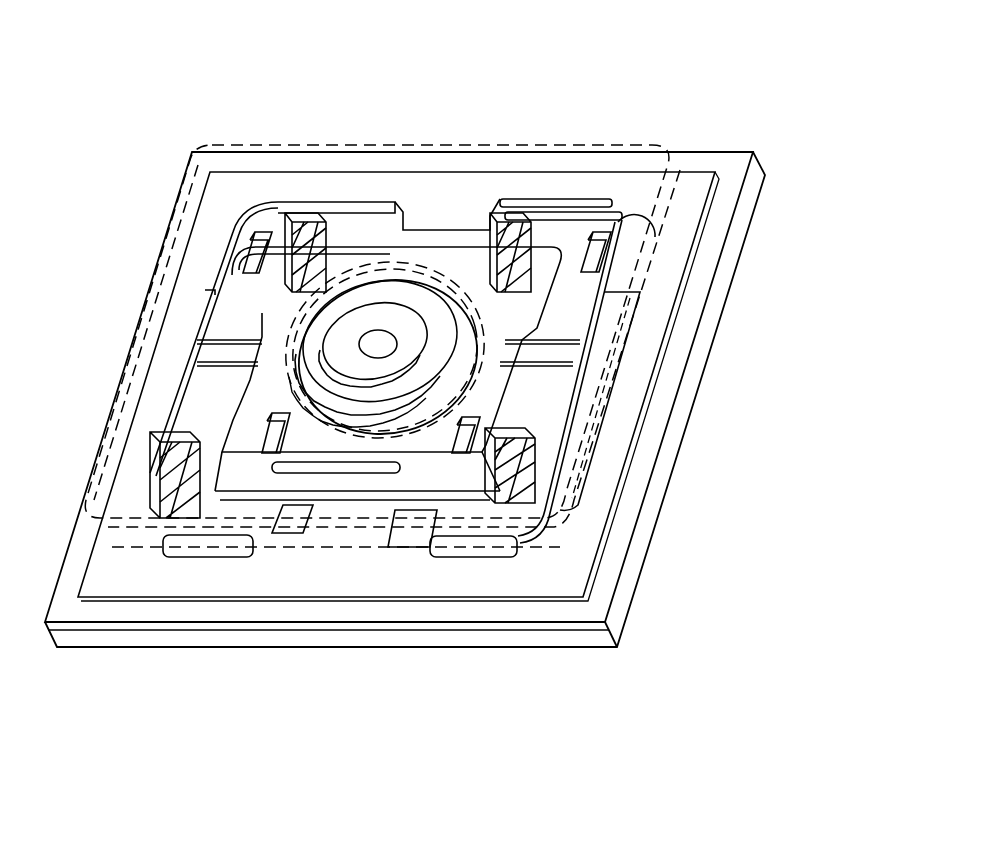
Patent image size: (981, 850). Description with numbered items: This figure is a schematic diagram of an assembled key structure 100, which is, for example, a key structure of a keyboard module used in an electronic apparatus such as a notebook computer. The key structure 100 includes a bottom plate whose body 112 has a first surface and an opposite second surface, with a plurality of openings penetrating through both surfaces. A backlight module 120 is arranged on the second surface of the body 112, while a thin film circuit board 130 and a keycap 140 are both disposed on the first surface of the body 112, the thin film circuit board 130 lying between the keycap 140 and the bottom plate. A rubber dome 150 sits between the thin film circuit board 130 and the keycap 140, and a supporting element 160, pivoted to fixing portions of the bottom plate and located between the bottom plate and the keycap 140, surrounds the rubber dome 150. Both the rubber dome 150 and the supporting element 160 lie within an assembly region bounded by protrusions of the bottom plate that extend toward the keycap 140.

The key structure 100 is at (722, 118).
The body 112 is at (676, 363).
The backlight module 120 is at (713, 323).
The thin film circuit board 130 is at (408, 300).
The keycap 140 is at (331, 140).
The rubber dome 150 is at (348, 334).
The supporting element 160 is at (233, 320).